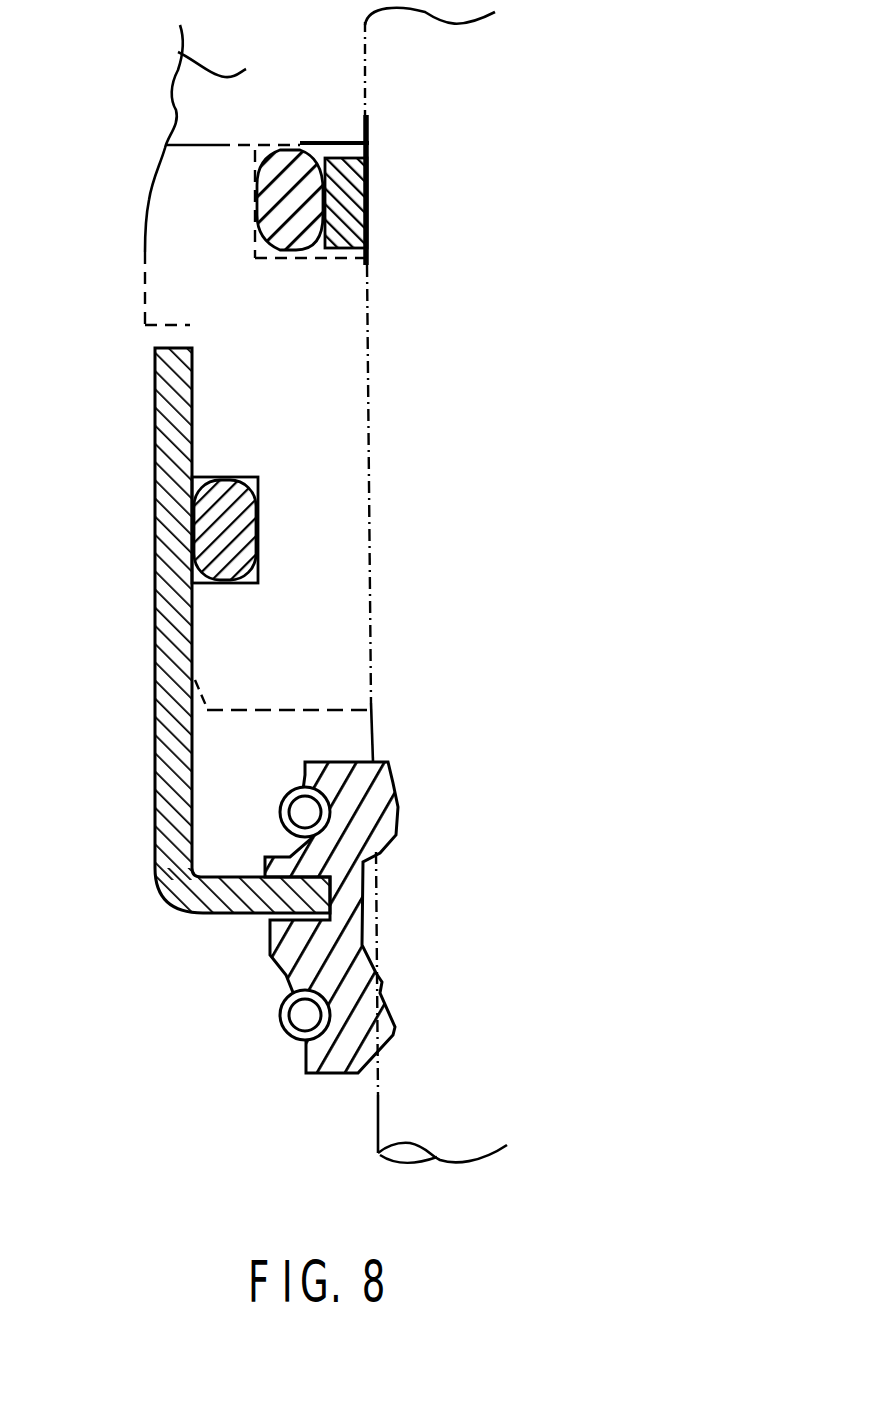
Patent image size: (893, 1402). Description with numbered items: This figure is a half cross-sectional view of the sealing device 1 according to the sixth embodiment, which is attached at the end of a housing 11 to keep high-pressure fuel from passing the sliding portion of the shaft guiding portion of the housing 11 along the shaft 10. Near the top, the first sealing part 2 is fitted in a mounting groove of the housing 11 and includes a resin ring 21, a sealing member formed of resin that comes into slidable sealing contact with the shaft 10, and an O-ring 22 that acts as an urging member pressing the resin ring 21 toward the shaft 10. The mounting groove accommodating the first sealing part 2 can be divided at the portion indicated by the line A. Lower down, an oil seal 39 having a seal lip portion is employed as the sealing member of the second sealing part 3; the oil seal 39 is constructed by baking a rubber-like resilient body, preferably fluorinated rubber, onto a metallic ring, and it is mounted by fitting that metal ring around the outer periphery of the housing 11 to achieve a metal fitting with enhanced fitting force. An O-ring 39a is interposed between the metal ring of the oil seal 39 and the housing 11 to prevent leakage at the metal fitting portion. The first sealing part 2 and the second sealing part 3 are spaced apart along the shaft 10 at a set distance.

The sealing device 1 is at (287, 710).
The first sealing part 2 is at (299, 207).
The second sealing part 3 is at (168, 928).
The shaft 10 is at (407, 488).
The housing 11 is at (180, 50).
The resin ring 21 is at (368, 197).
The O-ring 22 is at (258, 193).
The oil seal 39 is at (364, 890).
The O-ring 39a is at (215, 533).
The line A is at (205, 145).